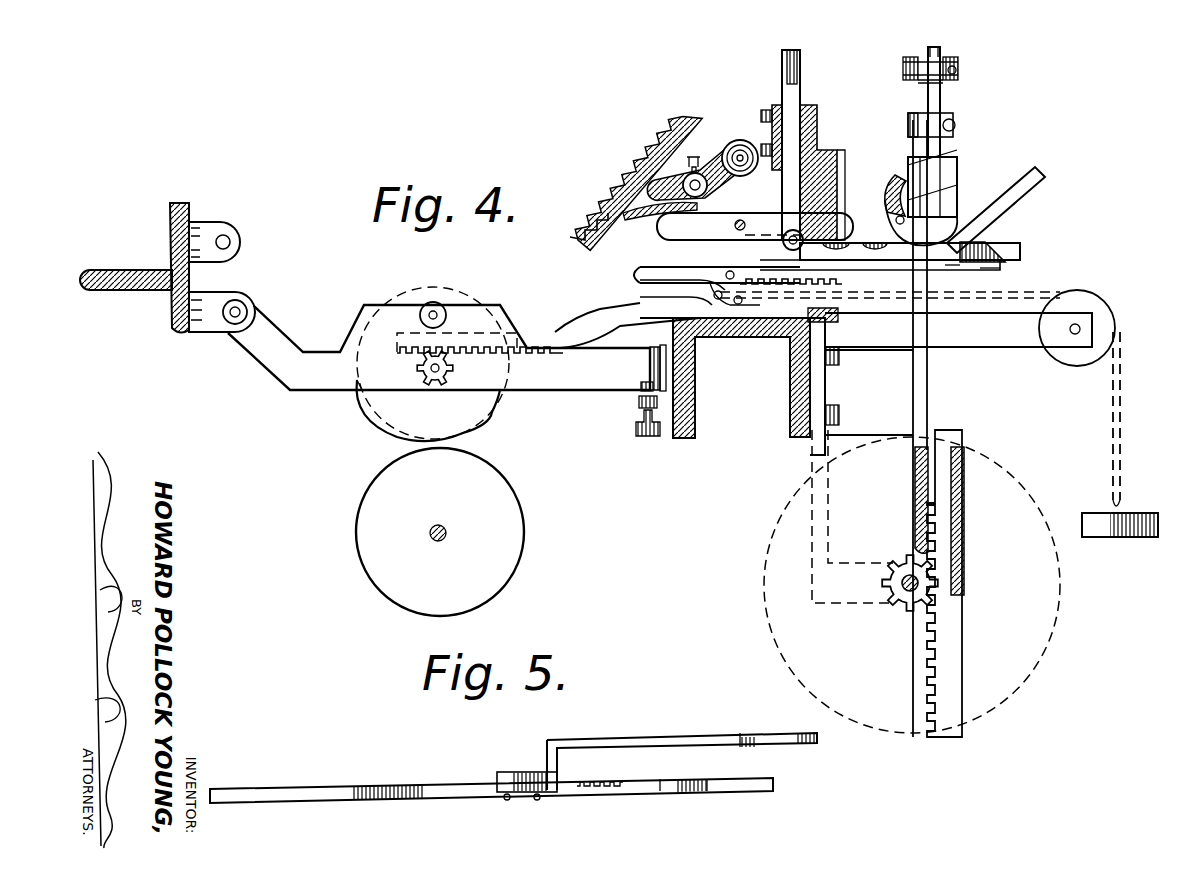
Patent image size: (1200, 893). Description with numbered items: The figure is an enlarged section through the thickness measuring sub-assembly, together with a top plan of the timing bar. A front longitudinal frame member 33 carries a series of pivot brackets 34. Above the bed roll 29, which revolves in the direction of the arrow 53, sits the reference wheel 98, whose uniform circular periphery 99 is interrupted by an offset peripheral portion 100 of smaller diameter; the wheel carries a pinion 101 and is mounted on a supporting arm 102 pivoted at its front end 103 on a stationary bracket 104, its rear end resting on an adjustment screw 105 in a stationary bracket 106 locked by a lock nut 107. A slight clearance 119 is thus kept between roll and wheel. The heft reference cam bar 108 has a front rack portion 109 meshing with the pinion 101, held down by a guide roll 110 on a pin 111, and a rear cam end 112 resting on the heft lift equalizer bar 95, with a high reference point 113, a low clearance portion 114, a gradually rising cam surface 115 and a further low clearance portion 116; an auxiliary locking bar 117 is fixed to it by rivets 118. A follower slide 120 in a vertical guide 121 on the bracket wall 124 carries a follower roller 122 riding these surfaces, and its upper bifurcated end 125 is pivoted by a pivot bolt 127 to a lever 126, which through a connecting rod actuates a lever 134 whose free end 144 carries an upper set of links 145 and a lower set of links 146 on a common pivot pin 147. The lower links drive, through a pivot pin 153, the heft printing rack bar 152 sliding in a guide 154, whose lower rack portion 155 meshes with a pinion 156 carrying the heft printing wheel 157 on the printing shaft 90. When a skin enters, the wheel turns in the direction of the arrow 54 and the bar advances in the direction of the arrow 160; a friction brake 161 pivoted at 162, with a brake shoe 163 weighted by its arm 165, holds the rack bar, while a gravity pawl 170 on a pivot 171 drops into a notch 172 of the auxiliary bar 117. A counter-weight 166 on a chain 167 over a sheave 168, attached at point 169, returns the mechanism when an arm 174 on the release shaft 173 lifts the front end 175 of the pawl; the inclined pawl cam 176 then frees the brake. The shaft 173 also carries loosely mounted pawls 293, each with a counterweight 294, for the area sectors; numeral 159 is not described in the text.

In FIG. 4, the bed roll 29 is at (358, 513).
In FIG. 4, the front longitudinal frame member 33 is at (134, 268).
In FIG. 4, the pivot bracket 34 is at (221, 228).
In FIG. 4, the arrow 53 is at (408, 472).
In FIG. 4, the arrow 54 is at (471, 407).
In FIG. 4, the printing shaft 90 is at (887, 583).
In FIG. 4, the heft lift equalizer bar 95 is at (780, 340).
In FIG. 4, the reference wheel 98 is at (378, 414).
In FIG. 4, the uniform circular periphery 99 is at (365, 397).
In FIG. 4, the offset peripheral portion 100 is at (491, 411).
In FIG. 4, the pinion 101 is at (416, 369).
In FIG. 4, the supporting arm 102 is at (280, 358).
In FIG. 4, the front end 103 is at (240, 314).
In FIG. 4, the stationary bracket 104 is at (238, 300).
In FIG. 4, the adjustment screw 105 is at (640, 389).
In FIG. 4, the stationary bracket 106 is at (640, 408).
In FIG. 4, the lock nut 107 is at (642, 430).
In FIG. 4, the heft reference cam bar 108 is at (669, 314).
In FIG. 5, the heft reference cam bar 108 is at (469, 797).
In FIG. 4, the front rack portion 109 is at (456, 333).
In FIG. 5, the front rack portion 109 is at (341, 788).
In FIG. 4, the guide roll 110 is at (436, 304).
In FIG. 4, the pin 111 is at (430, 311).
In FIG. 4, the rear cam end 112 is at (998, 270).
In FIG. 5, the rear cam end 112 is at (676, 799).
In FIG. 4, the high reference point 113 is at (880, 236).
In FIG. 5, the high reference point 113 is at (670, 780).
In FIG. 5, the low clearance portion 114 is at (593, 792).
In FIG. 4, the gradually rising cam surface 115 is at (878, 284).
In FIG. 5, the gradually rising cam surface 115 is at (630, 793).
In FIG. 4, the low clearance portion 116 is at (955, 270).
In FIG. 5, the low clearance portion 116 is at (704, 791).
In FIG. 4, the auxiliary locking bar 117 is at (1015, 246).
In FIG. 5, the auxiliary locking bar 117 is at (660, 740).
In FIG. 4, the rivets 118 is at (722, 283).
In FIG. 5, the rivets 118 is at (536, 771).
In FIG. 4, the clearance 119 is at (400, 451).
In FIG. 4, the follower slide 120 is at (790, 118).
In FIG. 4, the vertical guide 121 is at (802, 122).
In FIG. 4, the follower roller 122 is at (720, 328).
In FIG. 4, the bracket wall 124 is at (832, 180).
In FIG. 4, the upper bifurcated end 125 is at (782, 92).
In FIG. 4, the lever 126 is at (780, 63).
In FIG. 4, the pivot bolt 127 is at (800, 62).
In FIG. 4, the lever 134 is at (904, 62).
In FIG. 4, the free end 144 is at (987, 53).
In FIG. 4, the upper set of links 145 is at (904, 72).
In FIG. 4, the lower set of links 146 is at (916, 85).
In FIG. 4, the common pivot pin 147 is at (957, 72).
In FIG. 4, the heft printing rack bar 152 is at (966, 482).
In FIG. 4, the pivot pin 153 is at (912, 124).
In FIG. 4, the guide 154 is at (952, 383).
In FIG. 4, the lower rack portion 155 is at (930, 641).
In FIG. 4, the pinion 156 is at (900, 593).
In FIG. 4, the heft printing wheel 157 is at (1058, 606).
In FIG. 4, the plate 159 is at (861, 386).
In FIG. 4, the arrow 160 is at (566, 308).
In FIG. 4, the friction brake 161 is at (948, 196).
In FIG. 4, the pivot 162 is at (958, 176).
In FIG. 4, the brake shoe 163 is at (945, 162).
In FIG. 4, the arm 165 is at (1022, 178).
In FIG. 4, the counter-weight 166 is at (1160, 526).
In FIG. 4, the chain 167 is at (1122, 396).
In FIG. 4, the sheave 168 is at (1085, 302).
In FIG. 4, the point 169 is at (696, 380).
In FIG. 4, the pawl 170 is at (848, 226).
In FIG. 4, the pivot 171 is at (758, 214).
In FIG. 4, the notch 172 is at (1003, 265).
In FIG. 5, the notch 172 is at (752, 740).
In FIG. 4, the release shaft 173 is at (690, 180).
In FIG. 4, the arm 174 is at (683, 186).
In FIG. 4, the front end 175 is at (665, 220).
In FIG. 4, the inclined pawl cam 176 is at (986, 246).
In FIG. 4, the pawl 293 is at (650, 173).
In FIG. 4, the counterweight 294 is at (736, 150).